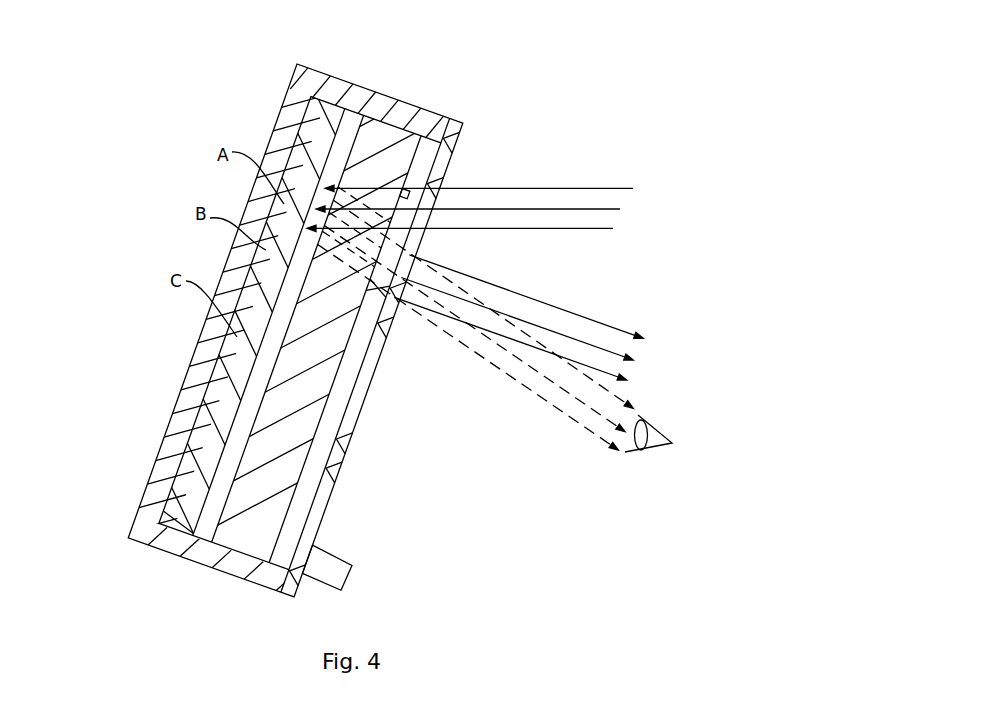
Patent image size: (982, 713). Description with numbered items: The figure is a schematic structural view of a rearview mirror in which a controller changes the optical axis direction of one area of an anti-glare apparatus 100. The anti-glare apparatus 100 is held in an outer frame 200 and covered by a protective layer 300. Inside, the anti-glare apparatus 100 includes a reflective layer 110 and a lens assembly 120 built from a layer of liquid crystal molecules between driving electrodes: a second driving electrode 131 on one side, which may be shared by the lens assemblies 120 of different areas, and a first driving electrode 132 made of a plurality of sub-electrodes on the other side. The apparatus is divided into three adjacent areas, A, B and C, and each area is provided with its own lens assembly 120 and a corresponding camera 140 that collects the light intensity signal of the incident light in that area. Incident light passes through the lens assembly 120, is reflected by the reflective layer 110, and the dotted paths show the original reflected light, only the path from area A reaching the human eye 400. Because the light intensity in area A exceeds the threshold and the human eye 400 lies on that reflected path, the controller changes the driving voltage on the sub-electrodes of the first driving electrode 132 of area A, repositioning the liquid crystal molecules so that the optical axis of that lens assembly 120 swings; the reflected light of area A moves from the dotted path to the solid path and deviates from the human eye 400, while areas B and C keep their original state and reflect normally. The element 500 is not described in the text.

The anti-glare apparatus 100 is at (273, 303).
The reflective layer 110 is at (206, 432).
The lens assembly 120 is at (257, 522).
The second driving electrode 131 is at (197, 390).
The first driving electrode 132 is at (405, 238).
The camera 140 is at (402, 192).
The outer frame 200 is at (306, 90).
The protective layer 300 is at (335, 477).
The human eye 400 is at (651, 441).
The connector 500 is at (333, 572).